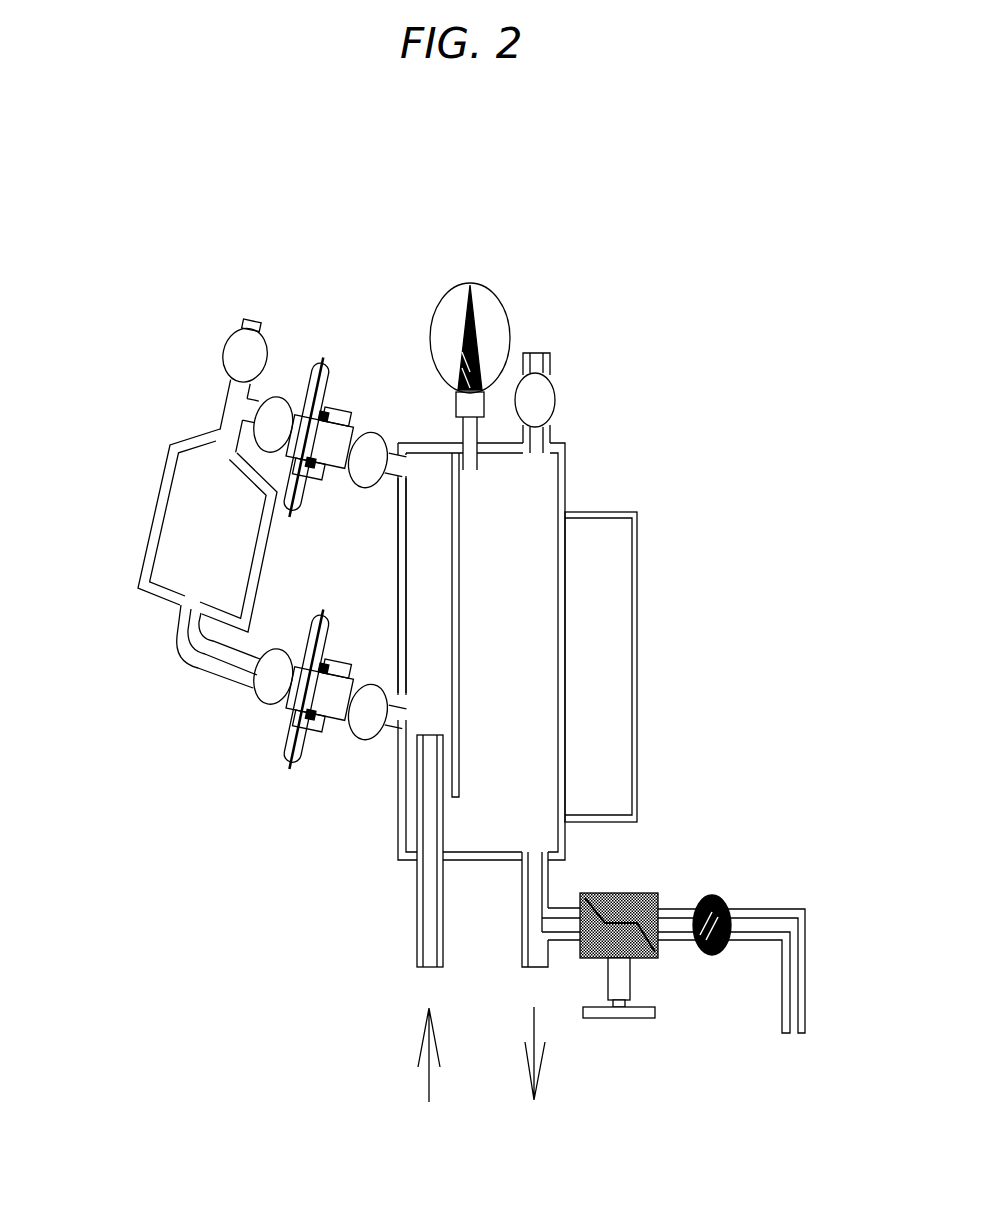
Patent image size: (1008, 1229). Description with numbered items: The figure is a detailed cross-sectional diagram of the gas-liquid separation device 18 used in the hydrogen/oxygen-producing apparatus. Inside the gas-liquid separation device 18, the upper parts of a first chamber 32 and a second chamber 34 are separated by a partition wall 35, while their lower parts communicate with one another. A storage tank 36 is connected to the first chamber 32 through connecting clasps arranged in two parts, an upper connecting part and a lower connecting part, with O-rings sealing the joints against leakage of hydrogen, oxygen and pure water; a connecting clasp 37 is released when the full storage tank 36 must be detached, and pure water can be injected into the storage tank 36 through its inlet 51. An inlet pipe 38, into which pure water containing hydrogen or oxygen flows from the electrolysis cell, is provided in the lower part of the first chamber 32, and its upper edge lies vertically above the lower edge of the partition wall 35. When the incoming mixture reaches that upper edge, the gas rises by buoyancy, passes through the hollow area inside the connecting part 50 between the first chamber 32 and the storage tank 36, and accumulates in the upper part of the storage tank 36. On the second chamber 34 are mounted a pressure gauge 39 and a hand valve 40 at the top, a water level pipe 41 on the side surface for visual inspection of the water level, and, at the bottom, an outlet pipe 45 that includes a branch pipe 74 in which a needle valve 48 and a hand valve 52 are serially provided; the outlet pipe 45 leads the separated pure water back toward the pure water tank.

The gas-liquid separation device 18 is at (203, 116).
The first chamber 32 is at (422, 473).
The second chamber 34 is at (530, 505).
The partition wall 35 is at (462, 615).
The storage tank 36 is at (155, 470).
The connecting clasp 37 is at (312, 355).
The inlet pipe 38 is at (430, 905).
The pressure gauge 39 is at (495, 332).
The hand valve 40 is at (537, 405).
The water level pipe 41 is at (630, 640).
The outlet pipe 45 is at (531, 906).
The needle valve 48 is at (625, 893).
The connecting part 50 is at (327, 500).
The inlet 51 is at (258, 324).
The hand valve 52 is at (711, 895).
The branch pipe 74 is at (792, 908).